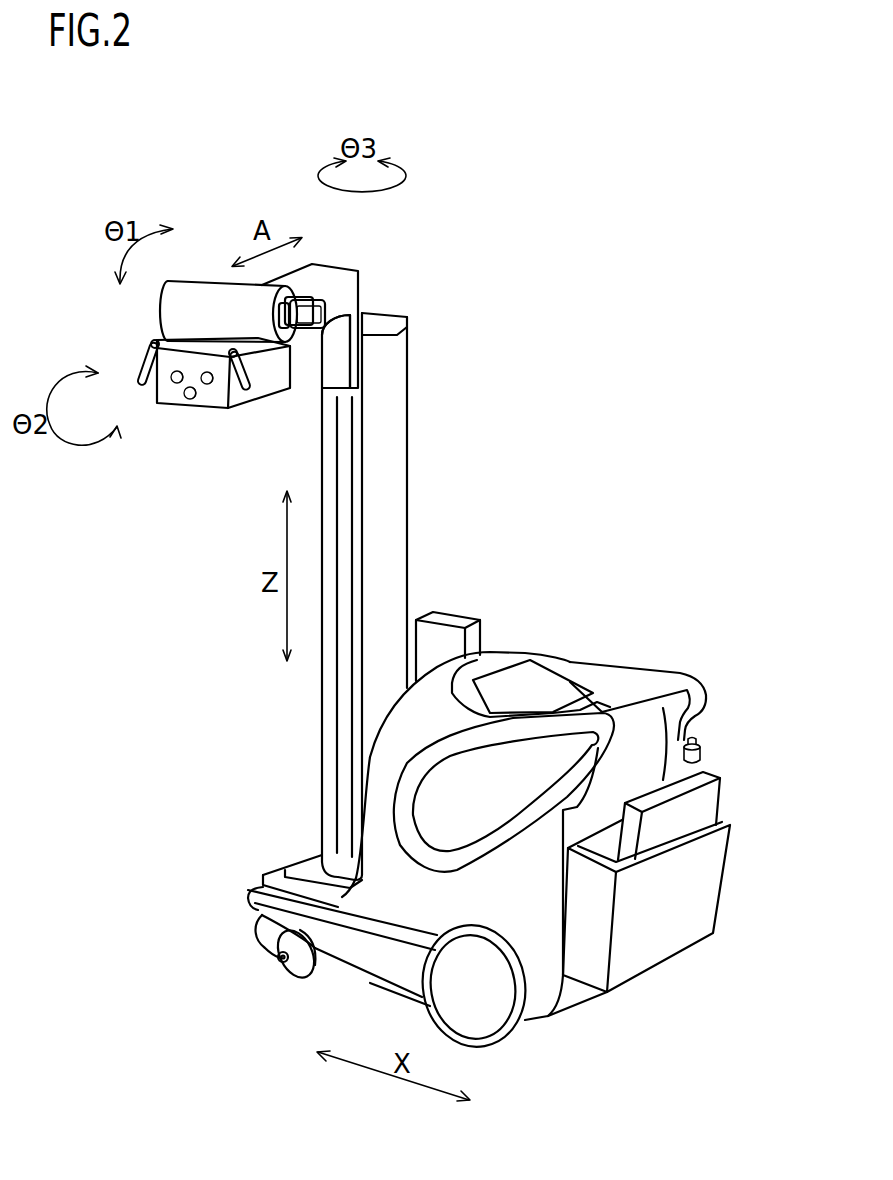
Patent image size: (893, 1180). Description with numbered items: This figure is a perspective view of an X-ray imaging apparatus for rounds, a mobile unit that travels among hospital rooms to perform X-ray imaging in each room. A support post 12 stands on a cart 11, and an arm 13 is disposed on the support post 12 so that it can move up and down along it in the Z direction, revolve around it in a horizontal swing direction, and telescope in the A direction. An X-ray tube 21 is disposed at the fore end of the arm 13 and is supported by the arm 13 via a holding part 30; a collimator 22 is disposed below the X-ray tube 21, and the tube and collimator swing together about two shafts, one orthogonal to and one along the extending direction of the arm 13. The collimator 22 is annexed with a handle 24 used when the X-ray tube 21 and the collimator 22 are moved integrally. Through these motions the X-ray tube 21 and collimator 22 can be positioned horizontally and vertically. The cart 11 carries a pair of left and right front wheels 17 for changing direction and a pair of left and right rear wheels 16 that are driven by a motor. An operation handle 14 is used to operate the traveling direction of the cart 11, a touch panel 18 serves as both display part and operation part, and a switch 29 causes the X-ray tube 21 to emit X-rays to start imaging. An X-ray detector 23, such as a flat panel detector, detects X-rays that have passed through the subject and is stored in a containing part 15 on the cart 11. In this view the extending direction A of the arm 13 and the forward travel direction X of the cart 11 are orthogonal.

The cart 11 is at (498, 660).
The support post 12 is at (385, 469).
The arm 13 is at (345, 296).
The operation handle 14 is at (642, 706).
The containing part 15 is at (693, 877).
The rear wheels 16 is at (483, 1017).
The front wheels 17 is at (295, 965).
The touch panel 18 is at (537, 681).
The X-ray tube 21 is at (165, 298).
The collimator 22 is at (234, 410).
The X-ray detector 23 is at (698, 803).
The handle 24 is at (142, 386).
The switch 29 is at (700, 740).
The holding part 30 is at (348, 302).